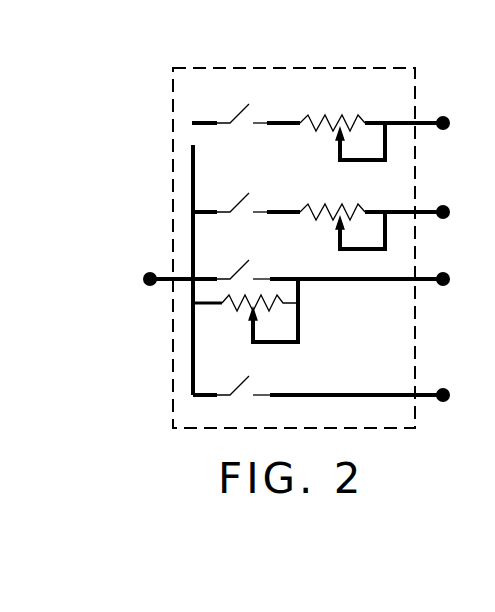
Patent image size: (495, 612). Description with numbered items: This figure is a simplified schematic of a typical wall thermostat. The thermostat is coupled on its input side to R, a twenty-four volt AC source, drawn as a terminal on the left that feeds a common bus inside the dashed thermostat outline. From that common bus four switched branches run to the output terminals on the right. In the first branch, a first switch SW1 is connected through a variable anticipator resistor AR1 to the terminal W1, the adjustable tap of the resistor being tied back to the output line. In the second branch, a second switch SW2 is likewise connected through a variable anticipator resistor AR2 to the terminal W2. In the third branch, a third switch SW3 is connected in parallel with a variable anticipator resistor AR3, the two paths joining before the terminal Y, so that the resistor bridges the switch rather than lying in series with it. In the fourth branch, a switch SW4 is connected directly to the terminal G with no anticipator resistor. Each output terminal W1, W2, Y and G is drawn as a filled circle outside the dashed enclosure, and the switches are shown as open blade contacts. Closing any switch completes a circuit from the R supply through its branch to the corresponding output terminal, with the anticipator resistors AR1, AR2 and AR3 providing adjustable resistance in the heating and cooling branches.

The 24 VAC source R is at (138, 291).
The first switch SW1 is at (246, 113).
The second switch SW2 is at (246, 202).
The third switch SW3 is at (246, 269).
The switch SW4 is at (231, 385).
The variable anticipator resistor AR1 is at (342, 137).
The variable anticipator resistor AR2 is at (342, 226).
The variable anticipator resistor AR3 is at (245, 310).
The W1 terminal W1 is at (430, 123).
The W2 terminal W2 is at (430, 212).
The Y terminal Y is at (381, 279).
The G terminal G is at (367, 395).